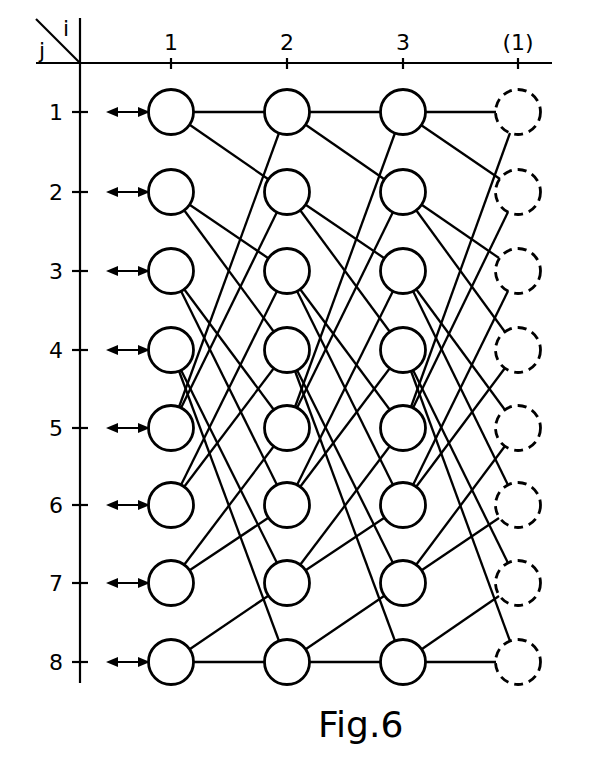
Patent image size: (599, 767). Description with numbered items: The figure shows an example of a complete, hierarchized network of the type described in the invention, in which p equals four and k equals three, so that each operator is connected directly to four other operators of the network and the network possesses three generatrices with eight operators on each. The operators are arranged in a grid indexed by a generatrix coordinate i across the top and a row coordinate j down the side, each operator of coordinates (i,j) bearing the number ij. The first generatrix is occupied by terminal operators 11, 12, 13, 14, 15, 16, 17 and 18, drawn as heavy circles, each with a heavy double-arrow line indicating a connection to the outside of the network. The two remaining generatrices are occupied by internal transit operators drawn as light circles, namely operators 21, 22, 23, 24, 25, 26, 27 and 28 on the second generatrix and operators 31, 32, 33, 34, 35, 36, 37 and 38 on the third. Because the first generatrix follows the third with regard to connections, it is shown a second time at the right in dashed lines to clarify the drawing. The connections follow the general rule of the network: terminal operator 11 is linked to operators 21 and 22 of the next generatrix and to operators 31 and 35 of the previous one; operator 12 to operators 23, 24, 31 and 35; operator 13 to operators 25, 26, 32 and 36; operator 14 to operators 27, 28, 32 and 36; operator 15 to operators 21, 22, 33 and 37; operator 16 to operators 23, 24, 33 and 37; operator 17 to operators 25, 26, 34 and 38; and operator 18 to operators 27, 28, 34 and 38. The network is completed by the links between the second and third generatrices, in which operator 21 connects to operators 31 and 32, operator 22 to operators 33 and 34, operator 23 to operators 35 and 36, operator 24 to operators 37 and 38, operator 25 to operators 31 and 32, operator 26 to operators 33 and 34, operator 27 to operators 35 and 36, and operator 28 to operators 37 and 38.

The terminal operator 11 is at (345, 112).
The terminal operator 12 is at (345, 192).
The terminal operator 13 is at (345, 271).
The terminal operator 14 is at (345, 350).
The terminal operator 15 is at (345, 428).
The terminal operator 16 is at (345, 505).
The terminal operator 17 is at (345, 583).
The terminal operator 18 is at (345, 662).
The internal transit operator 21 is at (287, 112).
The internal transit operator 22 is at (287, 192).
The internal transit operator 23 is at (287, 271).
The internal transit operator 24 is at (287, 350).
The internal transit operator 25 is at (287, 428).
The internal transit operator 26 is at (287, 505).
The internal transit operator 27 is at (287, 583).
The internal transit operator 28 is at (287, 662).
The internal transit operator 31 is at (403, 112).
The internal transit operator 32 is at (403, 192).
The internal transit operator 33 is at (403, 271).
The internal transit operator 34 is at (403, 350).
The internal transit operator 35 is at (403, 428).
The internal transit operator 36 is at (403, 505).
The internal transit operator 37 is at (403, 583).
The internal transit operator 38 is at (403, 662).